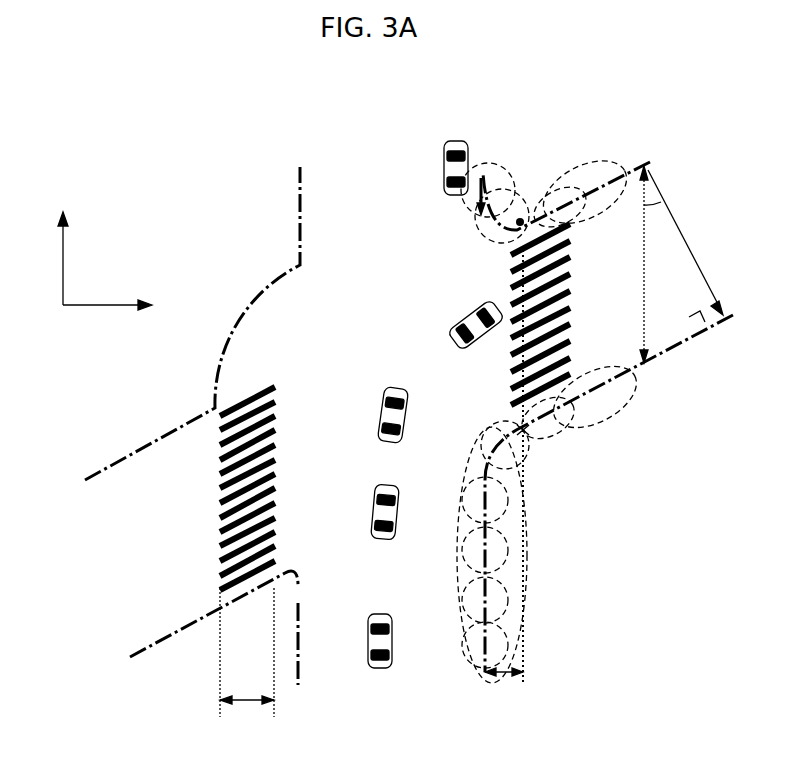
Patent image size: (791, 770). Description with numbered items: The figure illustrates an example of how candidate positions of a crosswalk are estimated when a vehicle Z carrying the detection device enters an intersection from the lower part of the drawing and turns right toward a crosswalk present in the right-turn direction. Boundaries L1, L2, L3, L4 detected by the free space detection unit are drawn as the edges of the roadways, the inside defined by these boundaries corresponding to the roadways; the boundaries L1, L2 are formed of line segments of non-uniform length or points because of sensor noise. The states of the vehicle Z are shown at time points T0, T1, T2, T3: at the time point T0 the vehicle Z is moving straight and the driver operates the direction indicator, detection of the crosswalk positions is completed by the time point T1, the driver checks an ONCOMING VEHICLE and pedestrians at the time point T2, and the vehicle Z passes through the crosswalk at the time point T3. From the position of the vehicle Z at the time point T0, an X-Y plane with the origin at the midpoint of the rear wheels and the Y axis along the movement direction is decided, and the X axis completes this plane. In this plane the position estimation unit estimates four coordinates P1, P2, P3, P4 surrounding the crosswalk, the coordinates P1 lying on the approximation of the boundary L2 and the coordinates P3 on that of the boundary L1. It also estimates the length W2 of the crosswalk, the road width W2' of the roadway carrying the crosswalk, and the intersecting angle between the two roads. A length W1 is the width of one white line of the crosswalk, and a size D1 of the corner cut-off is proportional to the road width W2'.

The boundary L1 is at (700, 338).
The boundary L2 is at (632, 164).
The boundary L3 is at (157, 645).
The boundary L4 is at (90, 470).
The coordinates of candidate position of crosswalk P1 is at (521, 223).
The coordinates of candidate position of crosswalk P2 is at (563, 199).
The coordinates of candidate position of crosswalk P3 is at (524, 430).
The coordinates of candidate position of crosswalk P4 is at (561, 410).
The time point T0 is at (366, 641).
The time point T1 is at (372, 512).
The time point T2 is at (382, 415).
The time point T3 is at (476, 324).
The length of one white line of crosswalk W1 is at (247, 662).
The length of crosswalk W2 is at (632, 264).
The road width W2' is at (685, 246).
The size of corner cut-off D1 is at (504, 685).
The vehicle Z is at (372, 668).
The X axis X is at (120, 307).
The Y axis Y is at (61, 247).
The oncoming vehicle ONCOMING VEHICLE is at (419, 178).